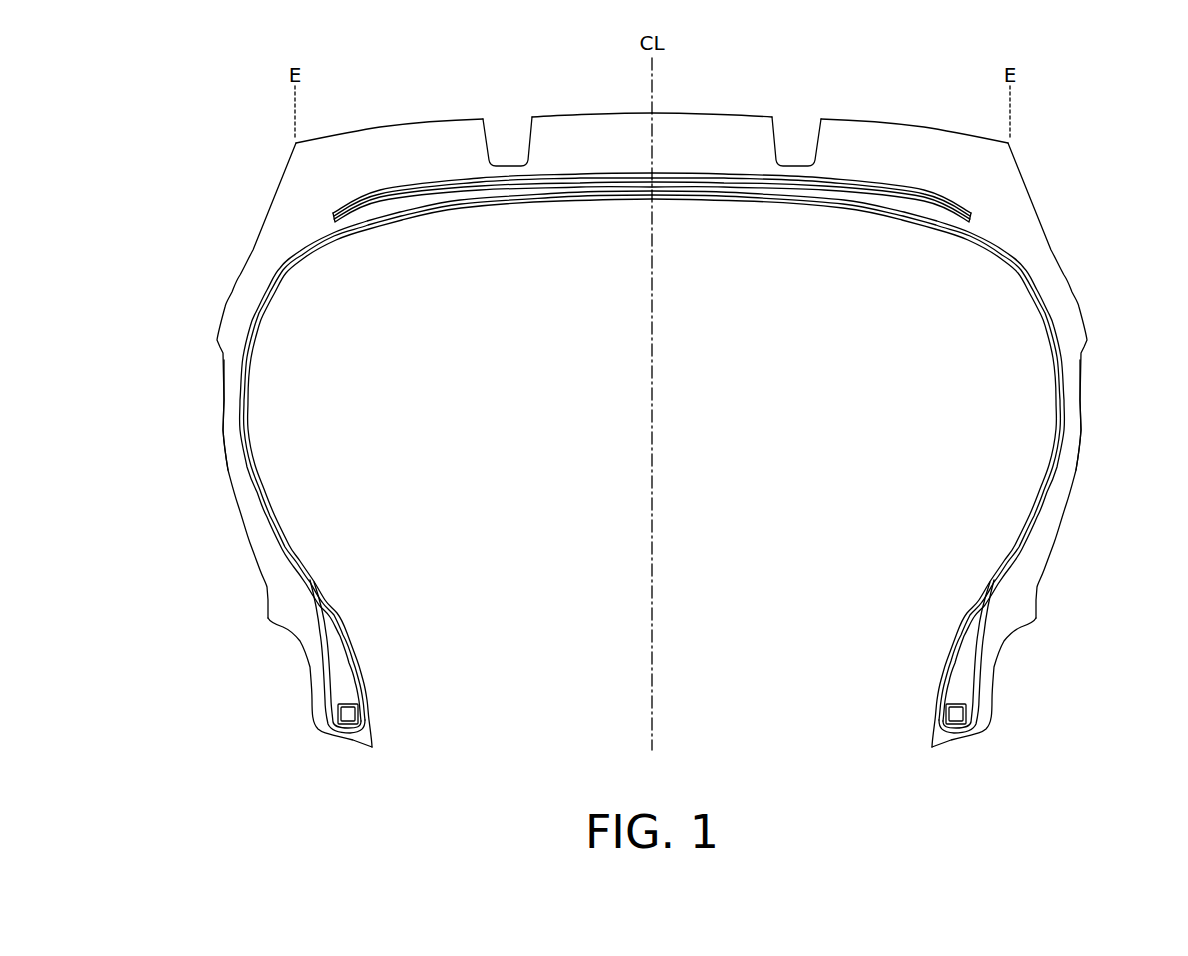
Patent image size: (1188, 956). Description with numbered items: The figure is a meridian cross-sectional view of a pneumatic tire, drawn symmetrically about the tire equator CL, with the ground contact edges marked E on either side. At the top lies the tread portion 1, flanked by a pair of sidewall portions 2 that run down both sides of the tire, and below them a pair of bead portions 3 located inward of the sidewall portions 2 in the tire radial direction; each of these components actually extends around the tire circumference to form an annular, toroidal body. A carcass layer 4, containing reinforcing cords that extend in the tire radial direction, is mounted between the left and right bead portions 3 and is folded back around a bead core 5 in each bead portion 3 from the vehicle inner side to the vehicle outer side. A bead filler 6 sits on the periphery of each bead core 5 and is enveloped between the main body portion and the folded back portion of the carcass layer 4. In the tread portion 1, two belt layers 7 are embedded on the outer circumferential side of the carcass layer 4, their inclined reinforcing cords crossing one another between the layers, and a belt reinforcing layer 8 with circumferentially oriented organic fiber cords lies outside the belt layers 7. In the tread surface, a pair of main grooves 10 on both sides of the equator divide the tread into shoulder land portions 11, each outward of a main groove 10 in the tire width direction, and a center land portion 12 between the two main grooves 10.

The tread portion 1 is at (687, 90).
The sidewall portion 2 is at (206, 474).
The bead portion 3 is at (298, 718).
The carcass layer 4 is at (997, 262).
The bead core 5 is at (353, 714).
The bead filler 6 is at (343, 656).
The belt layer 7 is at (730, 183).
The belt reinforcing layer 8 is at (830, 185).
The main groove 10 is at (501, 130).
The shoulder land portion 11 is at (343, 133).
The center land portion 12 is at (581, 112).